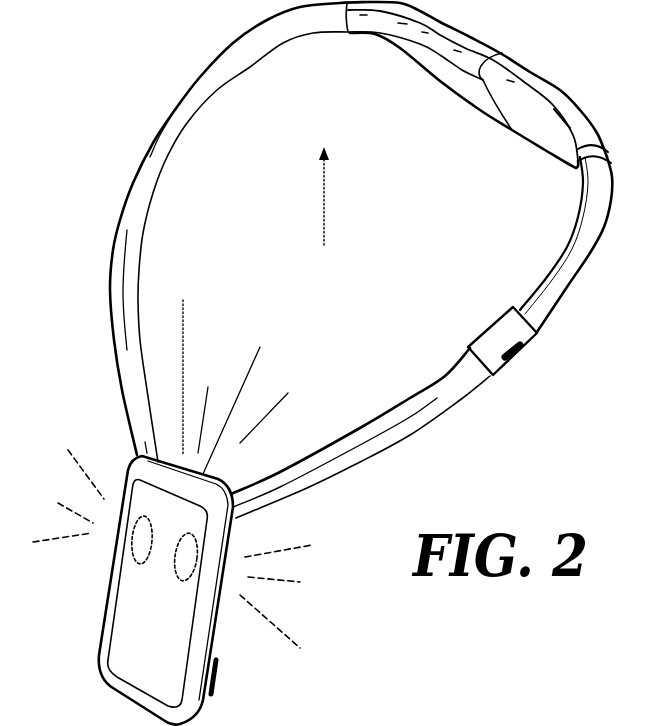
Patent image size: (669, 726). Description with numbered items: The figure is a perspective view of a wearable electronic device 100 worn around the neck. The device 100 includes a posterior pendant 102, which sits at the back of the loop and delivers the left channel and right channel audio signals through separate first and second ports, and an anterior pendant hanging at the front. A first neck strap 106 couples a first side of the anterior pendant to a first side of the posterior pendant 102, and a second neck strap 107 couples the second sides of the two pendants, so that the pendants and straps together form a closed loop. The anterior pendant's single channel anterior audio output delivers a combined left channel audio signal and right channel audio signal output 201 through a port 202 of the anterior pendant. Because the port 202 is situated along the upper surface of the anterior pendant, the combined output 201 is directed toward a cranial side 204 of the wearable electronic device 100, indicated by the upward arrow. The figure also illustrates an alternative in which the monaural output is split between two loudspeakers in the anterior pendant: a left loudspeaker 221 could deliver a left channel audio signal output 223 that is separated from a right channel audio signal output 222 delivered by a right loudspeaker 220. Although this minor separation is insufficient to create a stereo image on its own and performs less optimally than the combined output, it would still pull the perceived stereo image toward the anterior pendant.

The wearable electronic device 100 is at (580, 72).
The posterior pendant 102 is at (530, 127).
The first neck strap 106 is at (575, 255).
The second neck strap 107 is at (196, 85).
The combined left channel audio signal and right channel audio signal output 201 is at (250, 378).
The port 202 is at (202, 473).
The cranial side 204 is at (343, 196).
The right loudspeaker 220 is at (133, 548).
The left loudspeaker 221 is at (176, 576).
The right channel audio signal output 222 is at (88, 473).
The left channel audio signal output 223 is at (257, 607).